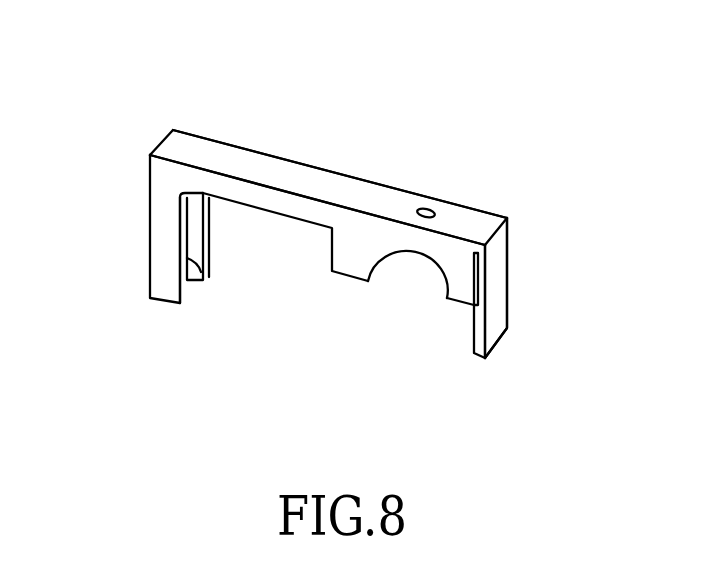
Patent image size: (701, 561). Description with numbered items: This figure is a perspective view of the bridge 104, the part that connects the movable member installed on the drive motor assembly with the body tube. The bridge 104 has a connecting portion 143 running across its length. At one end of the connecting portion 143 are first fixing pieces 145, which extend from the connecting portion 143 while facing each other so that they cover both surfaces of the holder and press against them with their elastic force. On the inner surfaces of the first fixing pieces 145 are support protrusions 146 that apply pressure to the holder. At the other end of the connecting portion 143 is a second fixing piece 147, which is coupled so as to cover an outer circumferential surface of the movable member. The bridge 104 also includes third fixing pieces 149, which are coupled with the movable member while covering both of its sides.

The bridge 104 is at (338, 72).
The connecting portion 143 is at (360, 186).
The first fixing pieces 145 is at (157, 230).
The support protrusions 146 is at (204, 278).
The second fixing piece 147 is at (500, 298).
The third fixing pieces 149 is at (358, 268).